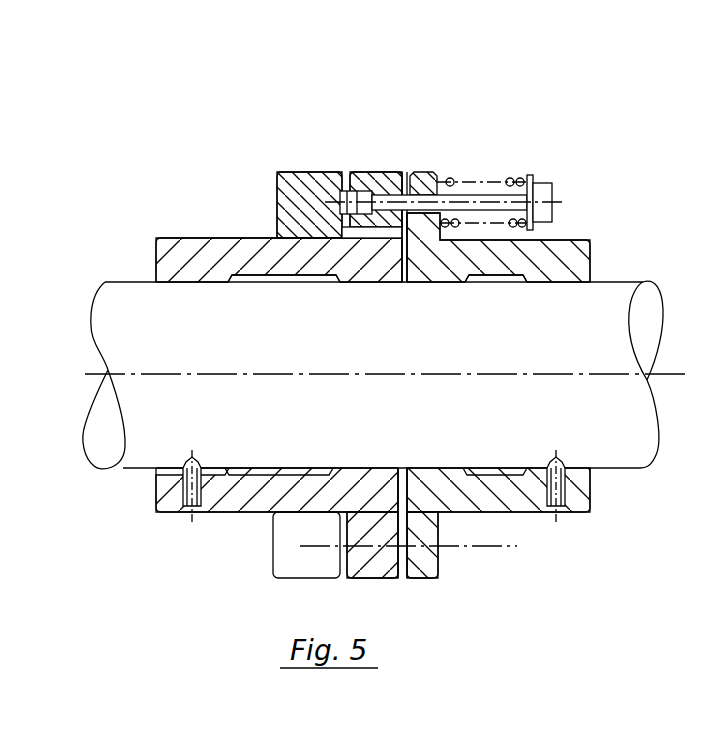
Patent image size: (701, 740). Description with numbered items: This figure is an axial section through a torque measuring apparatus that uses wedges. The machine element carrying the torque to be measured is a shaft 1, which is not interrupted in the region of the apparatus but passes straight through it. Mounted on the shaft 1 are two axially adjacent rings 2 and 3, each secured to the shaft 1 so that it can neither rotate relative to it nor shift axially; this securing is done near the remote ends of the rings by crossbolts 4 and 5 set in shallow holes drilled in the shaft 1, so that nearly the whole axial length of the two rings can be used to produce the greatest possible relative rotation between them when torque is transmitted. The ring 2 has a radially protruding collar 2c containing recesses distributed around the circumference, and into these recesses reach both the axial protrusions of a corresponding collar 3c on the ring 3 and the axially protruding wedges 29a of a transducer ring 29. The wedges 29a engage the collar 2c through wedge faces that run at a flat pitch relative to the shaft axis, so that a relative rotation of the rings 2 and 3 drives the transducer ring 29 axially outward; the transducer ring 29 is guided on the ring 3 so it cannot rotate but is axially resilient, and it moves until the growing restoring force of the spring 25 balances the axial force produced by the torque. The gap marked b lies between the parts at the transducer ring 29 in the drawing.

The shaft 1 is at (138, 322).
The ring 2 is at (208, 257).
The ring 3 is at (572, 258).
The crossbolt 4 is at (178, 490).
The crossbolt 5 is at (570, 490).
The transducer ring 29 is at (302, 193).
The wedge 29a is at (374, 185).
The spring 25 is at (507, 172).
The radially protruding collar 2c is at (377, 567).
The collar 3c is at (428, 535).
The slot b is at (405, 97).